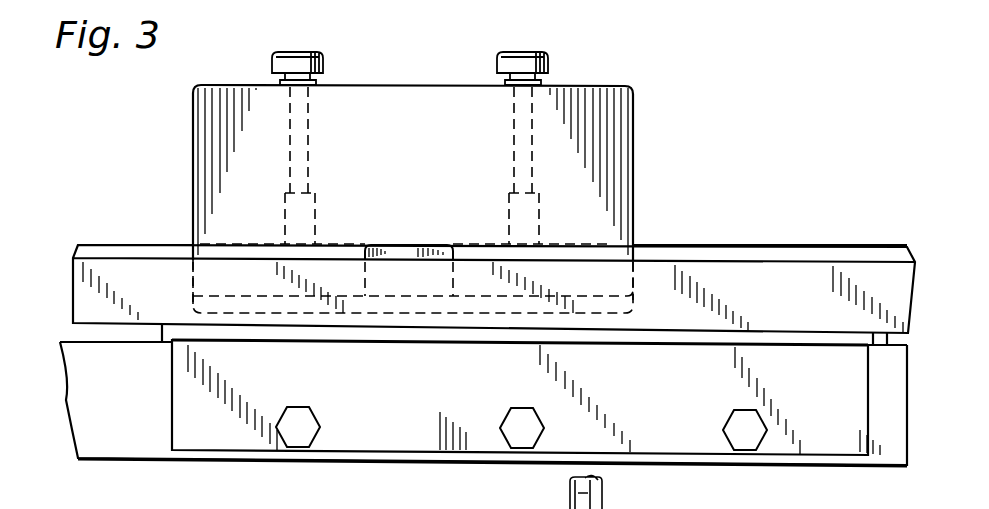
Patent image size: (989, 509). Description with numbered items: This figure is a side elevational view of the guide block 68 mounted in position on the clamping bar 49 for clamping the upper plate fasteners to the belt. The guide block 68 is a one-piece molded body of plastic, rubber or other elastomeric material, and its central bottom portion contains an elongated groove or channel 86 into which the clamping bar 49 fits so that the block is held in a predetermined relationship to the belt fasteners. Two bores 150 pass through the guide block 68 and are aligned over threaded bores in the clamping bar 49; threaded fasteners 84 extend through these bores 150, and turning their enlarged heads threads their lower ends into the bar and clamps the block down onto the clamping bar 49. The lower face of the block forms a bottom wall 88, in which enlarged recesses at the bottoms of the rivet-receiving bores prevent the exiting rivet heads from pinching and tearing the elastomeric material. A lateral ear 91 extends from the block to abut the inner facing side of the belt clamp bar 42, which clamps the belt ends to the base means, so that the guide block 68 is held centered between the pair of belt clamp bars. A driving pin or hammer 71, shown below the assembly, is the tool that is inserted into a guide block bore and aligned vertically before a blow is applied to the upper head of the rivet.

The belt clamp bar 42 is at (840, 266).
The clamping bar 49 is at (776, 210).
The guide block 68 is at (642, 196).
The driving pin or hammer 71 is at (603, 487).
The threaded fasteners 84 is at (569, 50).
The channel 86 is at (612, 244).
The bottom wall 88 is at (476, 316).
The lateral ear 91 is at (437, 200).
The bores 150 is at (555, 146).